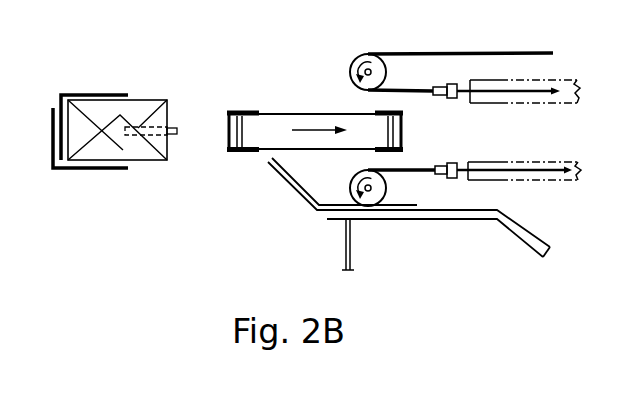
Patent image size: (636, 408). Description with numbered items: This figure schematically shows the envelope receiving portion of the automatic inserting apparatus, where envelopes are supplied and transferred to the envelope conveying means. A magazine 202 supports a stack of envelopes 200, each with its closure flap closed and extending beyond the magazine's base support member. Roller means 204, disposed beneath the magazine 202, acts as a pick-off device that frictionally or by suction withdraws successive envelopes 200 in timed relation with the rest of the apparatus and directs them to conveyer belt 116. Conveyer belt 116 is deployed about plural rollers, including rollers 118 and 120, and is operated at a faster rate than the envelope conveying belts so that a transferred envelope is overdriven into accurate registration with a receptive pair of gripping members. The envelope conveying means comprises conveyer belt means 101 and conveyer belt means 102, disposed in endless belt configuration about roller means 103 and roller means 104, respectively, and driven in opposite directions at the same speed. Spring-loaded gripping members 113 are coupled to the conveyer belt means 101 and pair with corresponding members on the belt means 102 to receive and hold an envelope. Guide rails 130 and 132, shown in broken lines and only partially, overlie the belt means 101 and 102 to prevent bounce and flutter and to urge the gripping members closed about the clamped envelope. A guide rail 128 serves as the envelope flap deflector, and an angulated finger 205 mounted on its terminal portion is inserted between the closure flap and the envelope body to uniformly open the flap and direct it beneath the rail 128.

The envelopes 200 is at (100, 158).
The magazine 202 is at (103, 95).
The roller means 204 is at (173, 135).
The conveyer belt 116 is at (327, 112).
The roller 118 is at (250, 110).
The roller 120 is at (375, 152).
The conveyer belt means 102 is at (450, 53).
The roller means 104 is at (388, 72).
The guide rail 130 is at (497, 81).
The roller means 103 is at (388, 188).
The gripping members 113 is at (447, 162).
The guide rail 132 is at (507, 162).
The angulated finger 205 is at (298, 192).
The envelope flap deflector means 128 is at (523, 240).
The conveyer belt means 101 is at (346, 249).